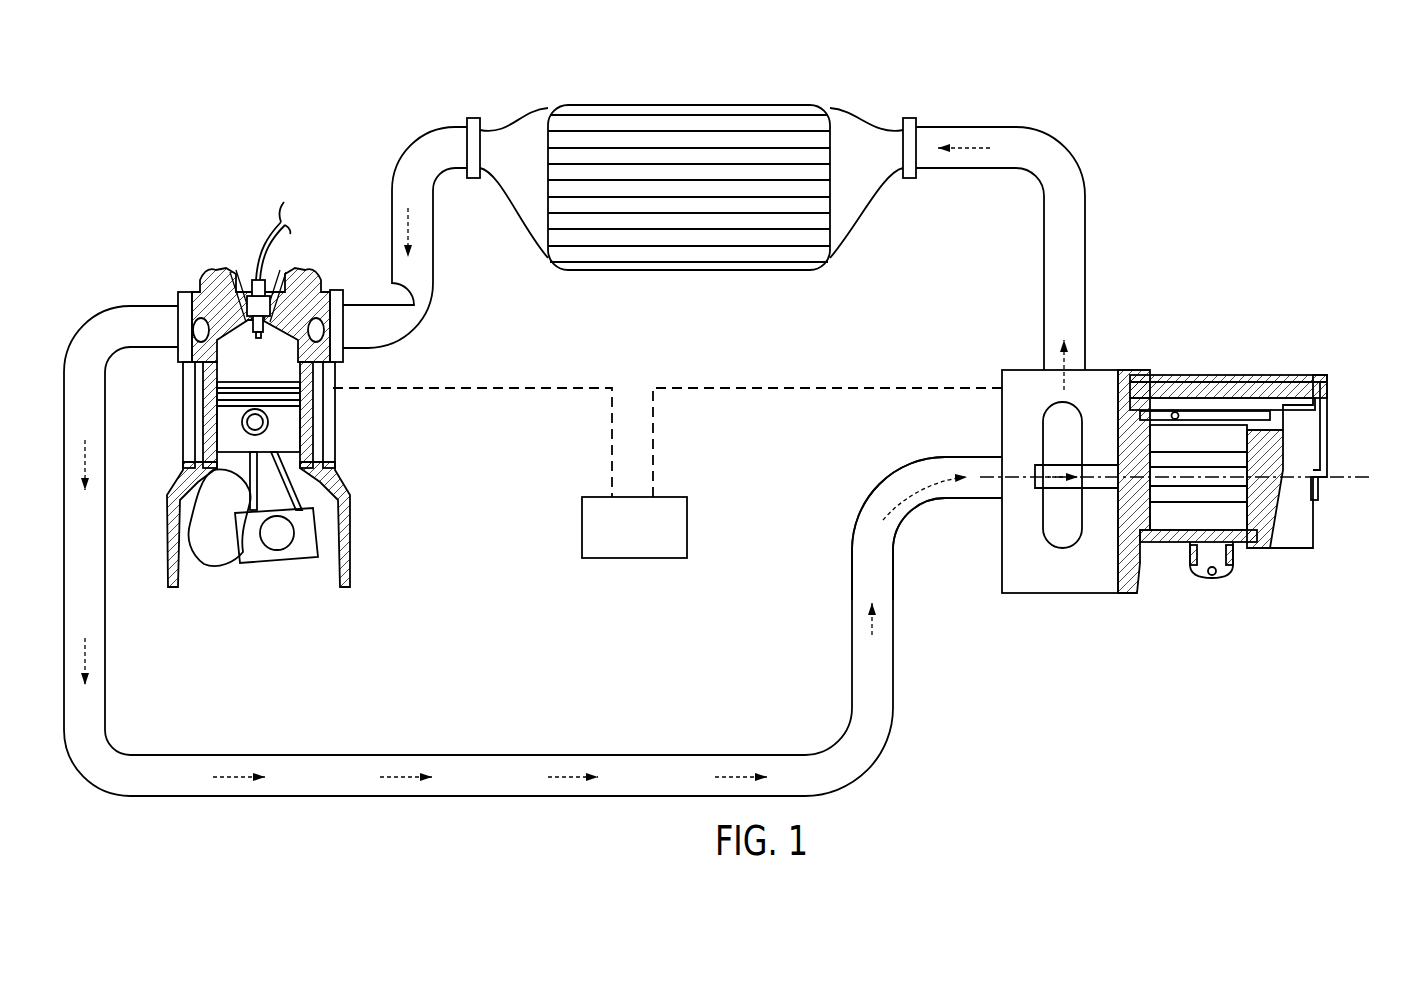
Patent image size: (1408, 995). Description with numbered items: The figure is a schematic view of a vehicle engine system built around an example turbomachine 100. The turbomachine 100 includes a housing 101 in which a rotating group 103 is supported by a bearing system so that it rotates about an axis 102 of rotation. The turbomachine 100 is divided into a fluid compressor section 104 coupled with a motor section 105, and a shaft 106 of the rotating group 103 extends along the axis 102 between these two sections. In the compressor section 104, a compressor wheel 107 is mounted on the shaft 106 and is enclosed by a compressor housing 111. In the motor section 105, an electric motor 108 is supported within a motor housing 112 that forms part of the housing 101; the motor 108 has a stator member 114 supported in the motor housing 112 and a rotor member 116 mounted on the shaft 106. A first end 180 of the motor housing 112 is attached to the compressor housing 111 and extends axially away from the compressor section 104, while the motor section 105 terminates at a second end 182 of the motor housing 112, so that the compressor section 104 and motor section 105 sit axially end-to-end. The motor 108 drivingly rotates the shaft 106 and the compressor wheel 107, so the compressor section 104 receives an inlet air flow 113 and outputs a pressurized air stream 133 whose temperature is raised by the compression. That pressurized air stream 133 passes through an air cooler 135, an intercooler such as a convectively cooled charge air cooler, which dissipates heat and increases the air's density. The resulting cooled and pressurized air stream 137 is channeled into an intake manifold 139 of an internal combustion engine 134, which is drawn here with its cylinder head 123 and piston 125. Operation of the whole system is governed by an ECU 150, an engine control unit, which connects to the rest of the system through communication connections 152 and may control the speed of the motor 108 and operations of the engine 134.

The turbomachine 100 is at (1213, 297).
The housing 101 is at (1130, 365).
The axis 102 is at (1355, 477).
The rotating group 103 is at (1108, 430).
The fluid compressor section 104 is at (1118, 645).
The motor section 105 is at (1327, 645).
The shaft 106 is at (1094, 490).
The compressor wheel 107 is at (1067, 543).
The electric motor 108 is at (1237, 432).
The compressor housing 111 is at (1002, 573).
The motor housing 112 is at (1200, 385).
The inlet air flow 113 is at (925, 482).
The stator member 114 is at (1182, 517).
The rotor member 116 is at (1240, 493).
The engine 123 is at (193, 312).
The piston 125 is at (292, 435).
The pressurized air stream 133 is at (1060, 362).
The internal combustion engine 134 is at (235, 150).
The air cooler 135 is at (683, 133).
The cooled and pressurized air stream 137 is at (394, 224).
The intake manifold 139 is at (331, 345).
The ECU 150 is at (633, 560).
The communication connections 152 is at (728, 388).
The first end 180 is at (1115, 592).
The second end 182 is at (1318, 490).